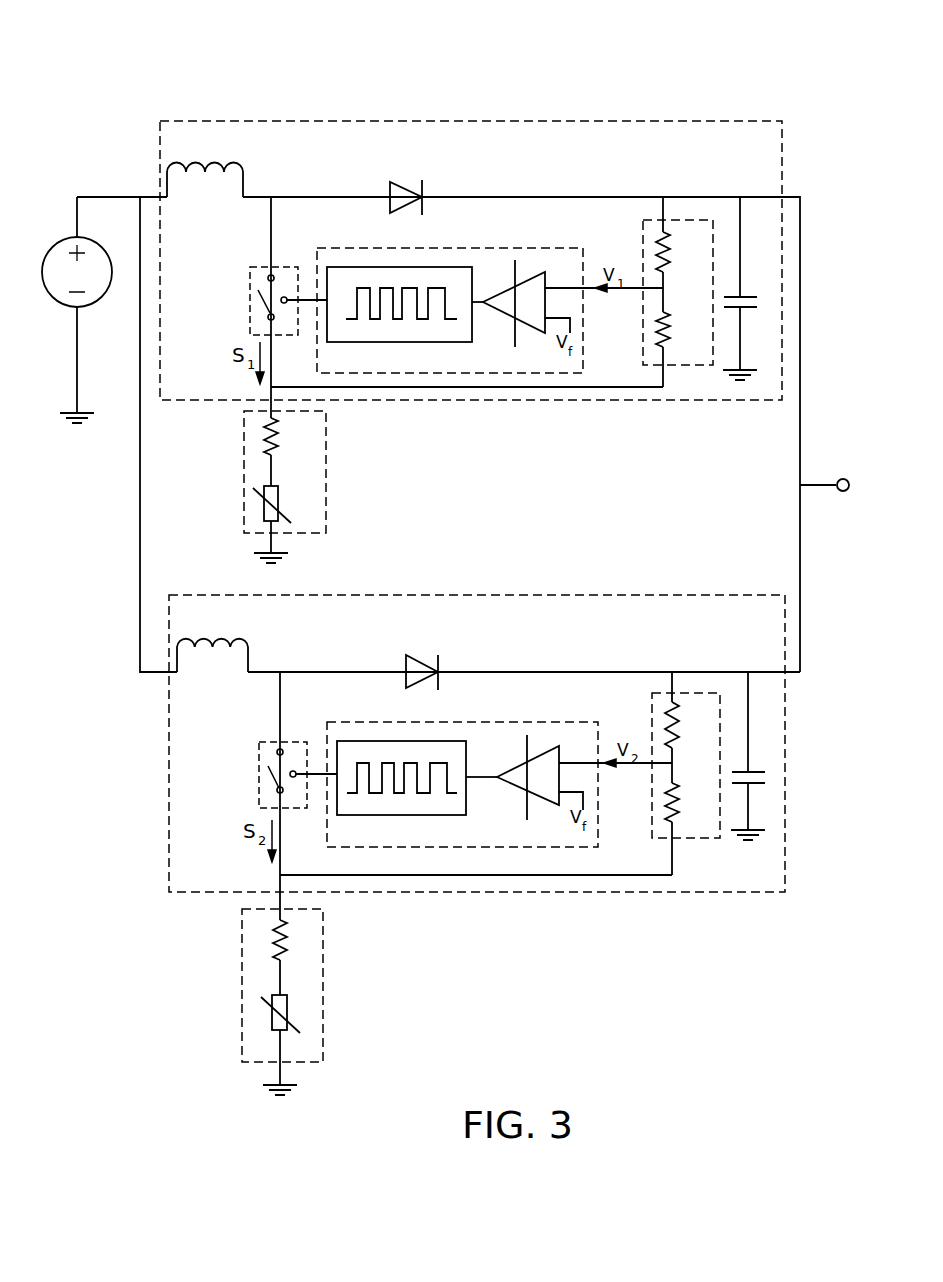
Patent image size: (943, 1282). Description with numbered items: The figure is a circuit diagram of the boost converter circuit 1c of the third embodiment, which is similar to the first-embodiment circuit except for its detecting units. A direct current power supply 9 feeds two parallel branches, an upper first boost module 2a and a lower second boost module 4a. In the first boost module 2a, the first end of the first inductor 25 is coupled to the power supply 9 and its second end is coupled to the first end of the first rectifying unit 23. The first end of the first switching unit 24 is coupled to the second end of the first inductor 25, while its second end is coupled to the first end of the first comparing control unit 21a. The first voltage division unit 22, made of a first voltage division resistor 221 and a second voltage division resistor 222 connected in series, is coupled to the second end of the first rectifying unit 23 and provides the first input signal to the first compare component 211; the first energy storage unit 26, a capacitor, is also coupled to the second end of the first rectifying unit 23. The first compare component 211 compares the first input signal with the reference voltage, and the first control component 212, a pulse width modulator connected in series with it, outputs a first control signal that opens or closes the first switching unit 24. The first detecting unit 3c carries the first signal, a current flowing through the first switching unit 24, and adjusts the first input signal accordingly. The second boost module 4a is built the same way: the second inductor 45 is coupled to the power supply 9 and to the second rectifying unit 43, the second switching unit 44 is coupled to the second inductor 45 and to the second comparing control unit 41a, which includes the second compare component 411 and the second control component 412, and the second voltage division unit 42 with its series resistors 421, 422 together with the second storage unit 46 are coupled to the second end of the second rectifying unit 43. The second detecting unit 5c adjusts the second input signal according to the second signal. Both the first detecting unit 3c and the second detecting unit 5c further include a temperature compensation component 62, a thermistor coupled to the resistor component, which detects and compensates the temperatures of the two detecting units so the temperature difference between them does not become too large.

The boost converter circuit 1c is at (152, 62).
The first boost module 2a is at (718, 120).
The direct current power supply 9 is at (57, 242).
The first inductor 25 is at (238, 166).
The first rectifying unit 23 is at (406, 186).
The first voltage division unit 22 is at (688, 220).
The first voltage division resistor 221 is at (685, 252).
The second voltage division resistor 222 is at (685, 329).
The first energy storage unit 26 is at (748, 283).
The first comparing control unit 21a is at (342, 248).
The first control component 212 is at (472, 267).
The first compare component 211 is at (545, 275).
The first switching unit 24 is at (258, 268).
The first detecting unit 3c is at (327, 490).
The temperature compensation component 62 is at (285, 759).
The second boost module 4a is at (665, 595).
The second inductor 45 is at (248, 642).
The second rectifying unit 43 is at (422, 660).
The second voltage division unit 42 is at (696, 693).
The first voltage division resistor of the second voltage division unit 421 is at (694, 725).
The second voltage division resistor of the second voltage division unit 422 is at (694, 802).
The second storage unit 46 is at (757, 751).
The second comparing control unit 41a is at (350, 722).
The second control component 412 is at (466, 741).
The second compare component 411 is at (559, 748).
The second switching unit 44 is at (262, 742).
The second detecting unit 5c is at (327, 952).